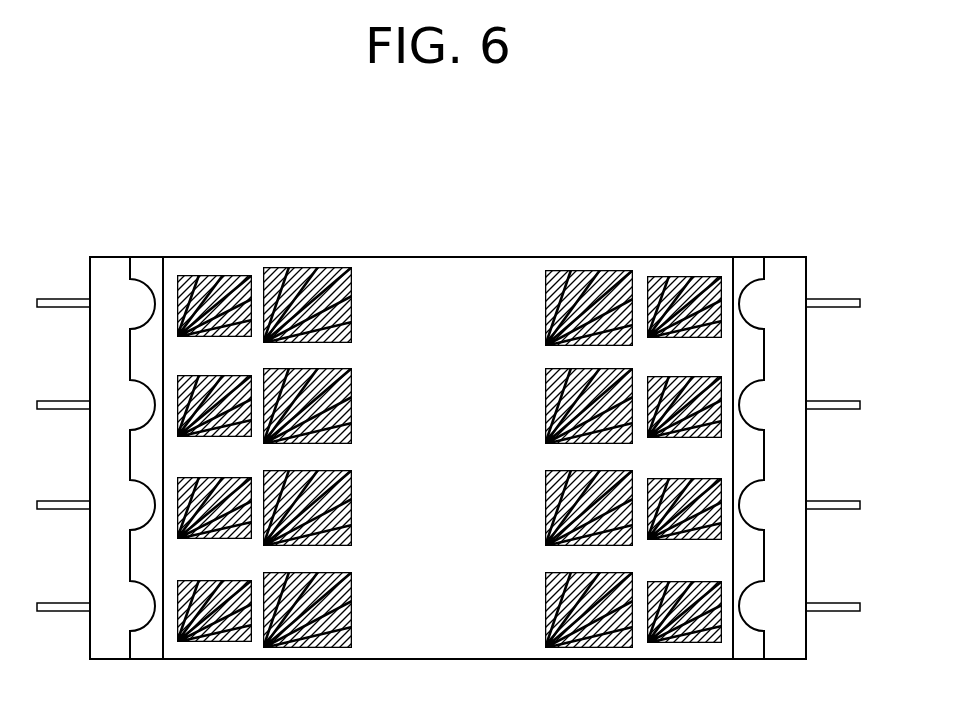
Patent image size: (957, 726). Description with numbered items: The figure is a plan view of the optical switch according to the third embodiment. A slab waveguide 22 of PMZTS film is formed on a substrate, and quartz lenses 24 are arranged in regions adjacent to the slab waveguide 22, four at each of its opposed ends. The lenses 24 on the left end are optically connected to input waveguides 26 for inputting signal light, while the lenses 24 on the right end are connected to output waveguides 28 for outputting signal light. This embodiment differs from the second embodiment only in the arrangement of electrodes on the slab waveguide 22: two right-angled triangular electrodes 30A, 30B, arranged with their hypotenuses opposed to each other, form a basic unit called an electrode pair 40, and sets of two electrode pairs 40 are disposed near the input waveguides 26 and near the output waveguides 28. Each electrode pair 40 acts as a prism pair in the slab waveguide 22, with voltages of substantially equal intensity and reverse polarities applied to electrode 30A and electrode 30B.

The slab waveguide 22 is at (436, 658).
The lenses 24 is at (104, 660).
The input waveguides 26 is at (64, 299).
The output waveguides 28 is at (838, 299).
The electrode 30A is at (202, 283).
The electrode 30B is at (227, 267).
The electrode pair 40 is at (267, 193).